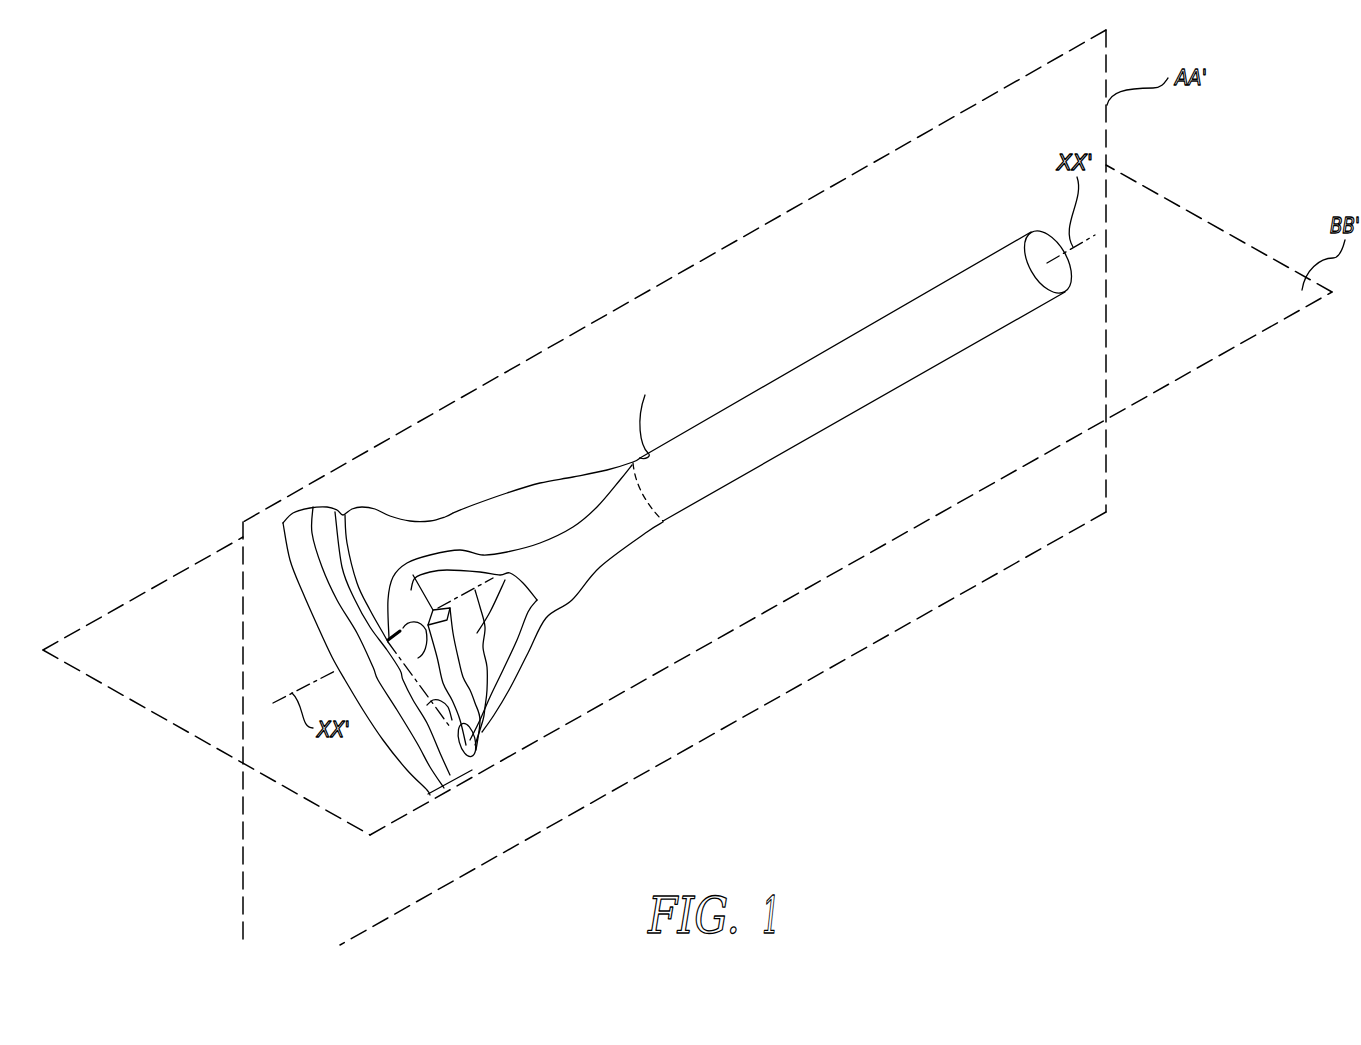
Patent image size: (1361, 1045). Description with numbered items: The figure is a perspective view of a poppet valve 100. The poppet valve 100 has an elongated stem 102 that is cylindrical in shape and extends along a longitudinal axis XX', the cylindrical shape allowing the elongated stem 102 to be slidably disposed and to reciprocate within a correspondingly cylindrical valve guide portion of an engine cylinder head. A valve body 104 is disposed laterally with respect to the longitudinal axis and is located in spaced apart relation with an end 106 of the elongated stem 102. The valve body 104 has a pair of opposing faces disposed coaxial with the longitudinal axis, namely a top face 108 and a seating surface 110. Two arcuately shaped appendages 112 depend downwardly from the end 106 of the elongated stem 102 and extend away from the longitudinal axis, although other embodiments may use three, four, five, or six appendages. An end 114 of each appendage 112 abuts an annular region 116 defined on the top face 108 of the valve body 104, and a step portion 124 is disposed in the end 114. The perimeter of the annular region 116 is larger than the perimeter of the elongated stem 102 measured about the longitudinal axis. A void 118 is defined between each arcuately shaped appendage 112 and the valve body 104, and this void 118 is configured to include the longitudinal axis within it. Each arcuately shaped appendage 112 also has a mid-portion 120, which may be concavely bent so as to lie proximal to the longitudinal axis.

The poppet valve 100 is at (393, 210).
The elongated stem 102 is at (935, 366).
The valve body 104 is at (430, 795).
The end of the elongated stem 106 is at (653, 532).
The top face 108 is at (403, 628).
The seating surface 110 is at (399, 733).
The arcuately shaped appendages 112 is at (525, 515).
The end of each appendage 114 is at (358, 533).
The annular region 116 is at (463, 737).
The void 118 is at (490, 615).
The mid-portion 120 is at (437, 533).
The step portion 124 is at (380, 613).